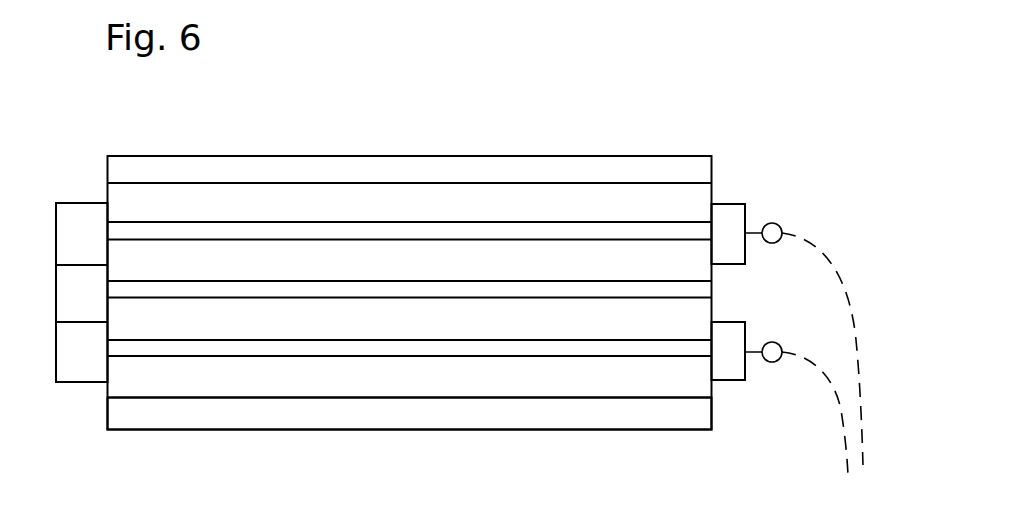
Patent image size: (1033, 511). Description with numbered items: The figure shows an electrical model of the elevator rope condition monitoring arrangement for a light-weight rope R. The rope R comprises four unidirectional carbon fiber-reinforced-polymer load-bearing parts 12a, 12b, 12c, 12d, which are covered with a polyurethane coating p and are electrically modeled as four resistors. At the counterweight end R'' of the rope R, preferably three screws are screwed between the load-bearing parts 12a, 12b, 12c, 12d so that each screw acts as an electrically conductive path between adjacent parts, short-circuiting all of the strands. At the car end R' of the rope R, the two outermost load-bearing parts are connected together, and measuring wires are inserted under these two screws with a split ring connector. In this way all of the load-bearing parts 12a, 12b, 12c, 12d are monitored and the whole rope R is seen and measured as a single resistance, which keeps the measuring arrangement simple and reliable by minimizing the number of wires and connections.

The load-bearing part 12a is at (278, 218).
The load-bearing part 12b is at (278, 276).
The load-bearing part 12c is at (278, 336).
The load-bearing part 12d is at (278, 394).
The rope R is at (410, 248).
The car end R' is at (788, 288).
The counterweight end R'' is at (82, 238).
The polyurethane coating p is at (322, 415).